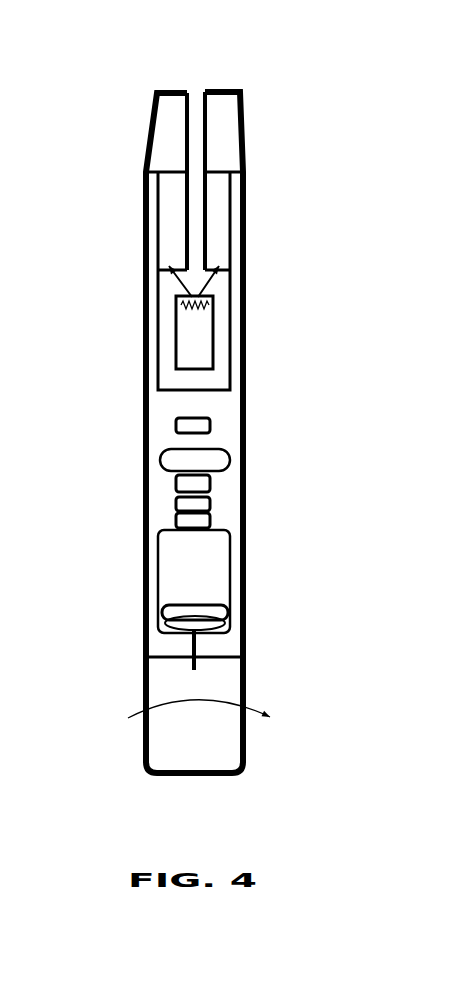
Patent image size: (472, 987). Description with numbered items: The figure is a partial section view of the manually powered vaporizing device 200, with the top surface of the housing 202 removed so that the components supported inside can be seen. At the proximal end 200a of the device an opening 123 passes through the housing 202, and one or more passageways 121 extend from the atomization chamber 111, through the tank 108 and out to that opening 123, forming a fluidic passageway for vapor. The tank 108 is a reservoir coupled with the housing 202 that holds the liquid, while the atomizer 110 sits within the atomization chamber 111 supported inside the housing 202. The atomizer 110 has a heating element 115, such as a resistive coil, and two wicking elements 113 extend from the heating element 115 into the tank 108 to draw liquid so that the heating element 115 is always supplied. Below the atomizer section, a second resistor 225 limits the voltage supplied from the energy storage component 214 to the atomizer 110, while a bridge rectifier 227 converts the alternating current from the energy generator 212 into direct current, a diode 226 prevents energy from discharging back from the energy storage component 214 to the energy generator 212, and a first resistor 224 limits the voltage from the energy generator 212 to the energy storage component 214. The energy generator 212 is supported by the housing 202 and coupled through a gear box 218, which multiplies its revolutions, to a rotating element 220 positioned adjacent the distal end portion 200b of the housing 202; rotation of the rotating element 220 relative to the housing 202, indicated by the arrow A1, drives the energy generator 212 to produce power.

The manually powered vaporizing device 200 is at (135, 45).
The proximal end 200a is at (233, 92).
The distal end portion 200b is at (173, 653).
The housing 202 is at (102, 183).
The opening 123 is at (195, 88).
The passageways 121 is at (192, 252).
The tank 108 is at (168, 250).
The atomization chamber 111 is at (167, 353).
The wicking elements 113 is at (212, 285).
The atomizer 110 is at (195, 342).
The heating element 115 is at (172, 311).
The second resistor 225 is at (198, 425).
The energy storage component 214 is at (177, 447).
The bridge rectifier 227 is at (193, 485).
The diode 226 is at (198, 505).
The first resistor 224 is at (202, 523).
The energy generator 212 is at (183, 547).
The gear box 218 is at (185, 617).
The rotating element 220 is at (187, 722).
The longitudinal axis A1 is at (212, 721).